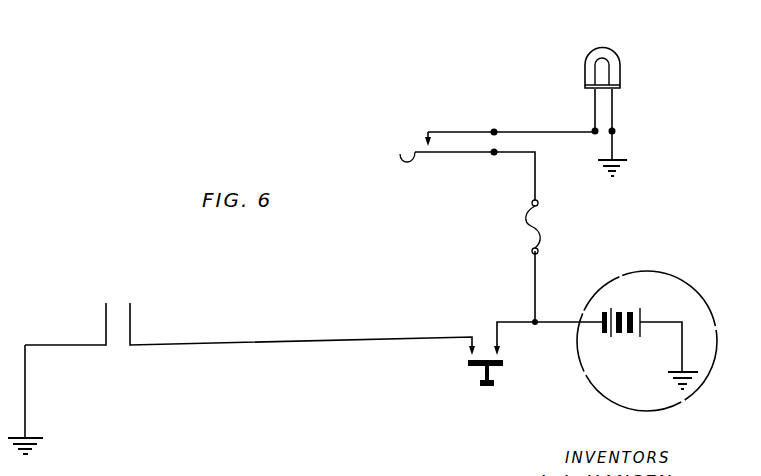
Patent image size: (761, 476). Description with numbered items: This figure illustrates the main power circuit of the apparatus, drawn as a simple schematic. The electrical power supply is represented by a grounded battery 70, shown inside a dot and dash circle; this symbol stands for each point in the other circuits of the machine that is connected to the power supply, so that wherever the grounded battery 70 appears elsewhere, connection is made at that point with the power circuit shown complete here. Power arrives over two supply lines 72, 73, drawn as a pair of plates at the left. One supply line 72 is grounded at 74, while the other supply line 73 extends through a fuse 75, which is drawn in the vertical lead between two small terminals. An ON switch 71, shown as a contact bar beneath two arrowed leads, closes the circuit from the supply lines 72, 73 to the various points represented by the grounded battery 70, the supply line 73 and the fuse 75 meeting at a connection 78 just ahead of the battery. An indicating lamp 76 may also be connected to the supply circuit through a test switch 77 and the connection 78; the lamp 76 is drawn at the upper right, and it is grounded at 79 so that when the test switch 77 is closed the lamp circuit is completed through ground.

The grounded battery 70 is at (620, 310).
The ON switch 71 is at (487, 372).
The supply line 72 is at (106, 306).
The supply line 73 is at (130, 304).
The ground 74 is at (43, 440).
The fuse 75 is at (540, 225).
The indicating lamp 76 is at (620, 65).
The test switch 77 is at (428, 153).
The connection 78 is at (535, 326).
The ground 79 is at (627, 163).